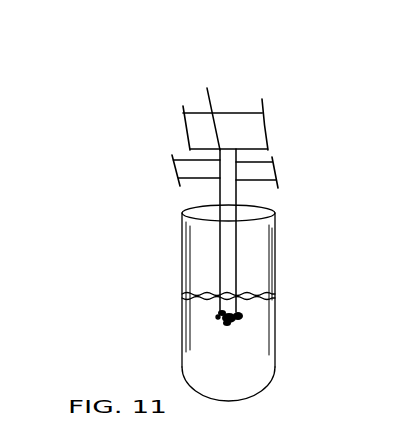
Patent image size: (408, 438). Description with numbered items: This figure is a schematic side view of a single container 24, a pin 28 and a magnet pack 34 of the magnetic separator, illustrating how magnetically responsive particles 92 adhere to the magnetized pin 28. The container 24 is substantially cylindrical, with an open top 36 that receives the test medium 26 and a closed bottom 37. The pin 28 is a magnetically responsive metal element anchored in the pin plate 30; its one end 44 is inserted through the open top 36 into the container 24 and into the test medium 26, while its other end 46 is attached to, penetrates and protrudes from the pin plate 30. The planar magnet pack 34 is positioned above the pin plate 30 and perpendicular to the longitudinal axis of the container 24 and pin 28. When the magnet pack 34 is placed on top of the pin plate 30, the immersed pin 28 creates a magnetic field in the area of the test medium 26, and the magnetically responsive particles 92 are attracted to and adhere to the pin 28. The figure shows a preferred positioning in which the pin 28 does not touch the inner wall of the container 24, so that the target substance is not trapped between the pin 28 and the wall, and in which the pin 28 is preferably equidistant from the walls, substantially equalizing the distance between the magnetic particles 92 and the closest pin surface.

The other end of pin 46 is at (208, 108).
The magnet pack 34 is at (255, 135).
The pin plate 30 is at (256, 176).
The pin 28 is at (232, 205).
The open top 36 is at (205, 213).
The container 24 is at (275, 258).
The closed bottom 37 is at (260, 387).
The test medium 26 is at (252, 350).
The one end of pin 44 is at (238, 305).
The magnetically responsive particles 92 is at (218, 317).